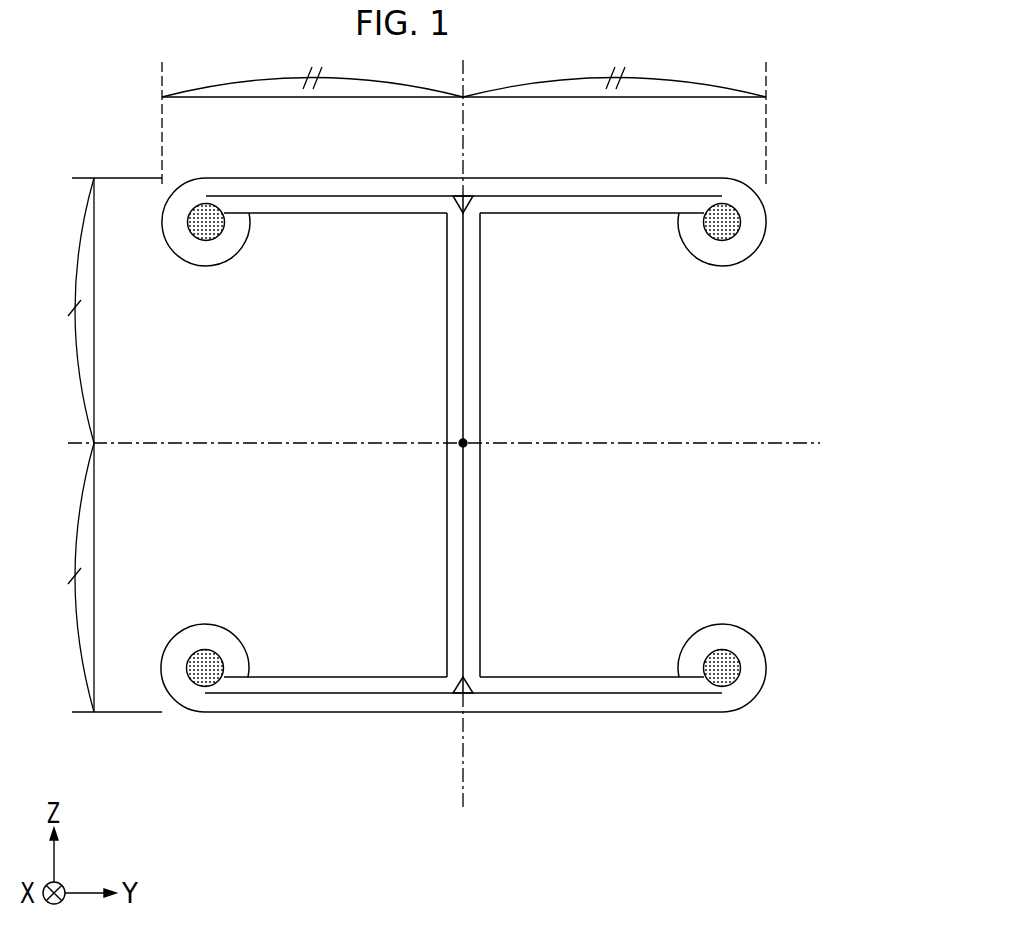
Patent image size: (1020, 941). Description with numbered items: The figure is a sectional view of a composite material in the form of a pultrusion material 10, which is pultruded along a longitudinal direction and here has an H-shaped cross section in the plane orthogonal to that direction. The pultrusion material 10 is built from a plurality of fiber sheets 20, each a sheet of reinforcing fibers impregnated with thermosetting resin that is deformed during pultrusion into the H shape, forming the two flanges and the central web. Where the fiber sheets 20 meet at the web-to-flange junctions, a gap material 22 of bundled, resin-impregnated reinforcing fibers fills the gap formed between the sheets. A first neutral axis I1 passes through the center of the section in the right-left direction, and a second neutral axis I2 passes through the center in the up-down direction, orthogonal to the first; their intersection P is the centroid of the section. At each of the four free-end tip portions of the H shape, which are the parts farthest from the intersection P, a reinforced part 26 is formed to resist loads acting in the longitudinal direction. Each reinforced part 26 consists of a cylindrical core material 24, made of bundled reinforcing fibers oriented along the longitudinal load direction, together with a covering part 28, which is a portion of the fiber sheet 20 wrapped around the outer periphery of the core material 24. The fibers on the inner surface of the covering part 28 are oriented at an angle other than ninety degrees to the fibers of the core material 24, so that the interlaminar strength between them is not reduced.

The pultrusion material 10 is at (800, 180).
The fiber sheet 20 is at (652, 178).
The gap material 22 is at (468, 212).
The core material 24 is at (206, 241).
The reinforced part 26 is at (265, 258).
The covering part 28 is at (172, 250).
The first neutral axis I1 is at (463, 130).
The second neutral axis I2 is at (650, 443).
The intersection P is at (467, 446).